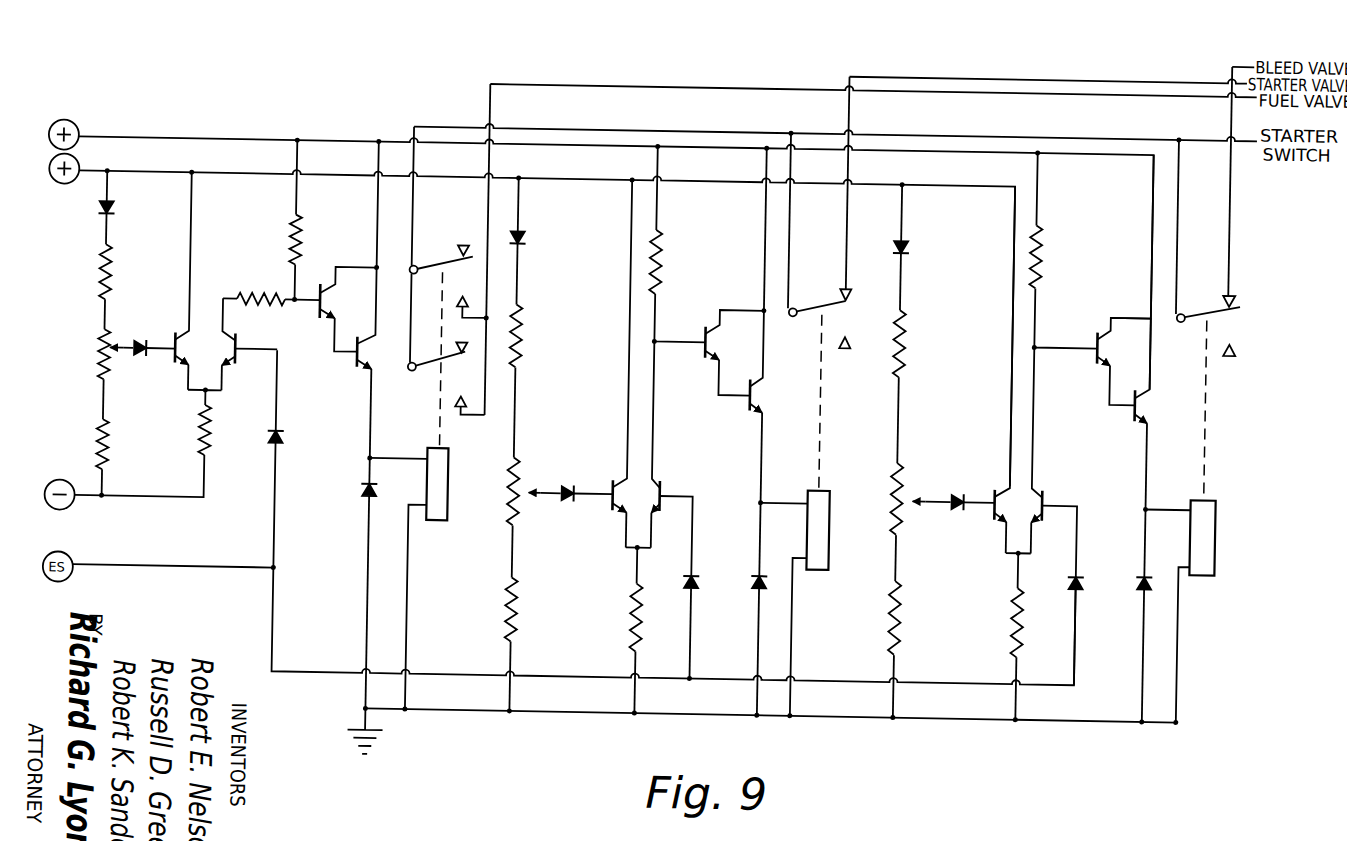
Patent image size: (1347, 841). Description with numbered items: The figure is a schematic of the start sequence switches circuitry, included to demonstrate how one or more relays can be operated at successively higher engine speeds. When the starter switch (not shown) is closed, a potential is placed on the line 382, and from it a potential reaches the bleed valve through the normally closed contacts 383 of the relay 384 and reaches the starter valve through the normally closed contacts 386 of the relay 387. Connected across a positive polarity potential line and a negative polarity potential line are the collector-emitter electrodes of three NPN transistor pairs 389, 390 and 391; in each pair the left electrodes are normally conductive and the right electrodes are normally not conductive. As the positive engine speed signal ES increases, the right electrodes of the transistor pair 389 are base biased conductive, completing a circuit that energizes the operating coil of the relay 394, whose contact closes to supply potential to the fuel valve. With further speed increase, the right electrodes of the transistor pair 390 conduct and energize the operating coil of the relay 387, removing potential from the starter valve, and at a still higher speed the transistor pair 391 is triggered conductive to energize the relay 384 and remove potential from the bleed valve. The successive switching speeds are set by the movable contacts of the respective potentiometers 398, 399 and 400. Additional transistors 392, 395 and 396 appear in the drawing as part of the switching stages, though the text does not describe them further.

The line 382 is at (1062, 131).
The normally closed contacts 383 is at (1228, 302).
The relay 384 is at (1210, 530).
The normally closed contacts 386 is at (849, 298).
The relay 387 is at (822, 570).
The transistor pair 389 is at (204, 352).
The transistor pair 390 is at (621, 526).
The transistor pair 391 is at (1004, 518).
The transistor 392 is at (320, 326).
The relay 394 is at (441, 514).
The transistor pair 395 is at (716, 367).
The transistor pair 396 is at (1104, 361).
The potentiometer 398 is at (98, 357).
The potentiometer 399 is at (520, 478).
The potentiometer 400 is at (905, 479).